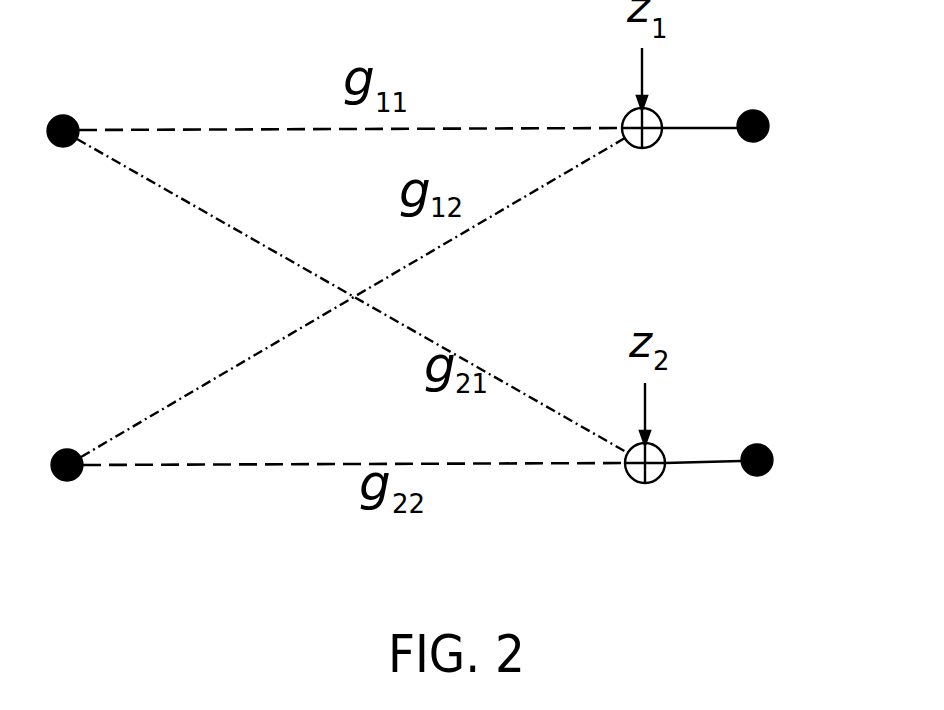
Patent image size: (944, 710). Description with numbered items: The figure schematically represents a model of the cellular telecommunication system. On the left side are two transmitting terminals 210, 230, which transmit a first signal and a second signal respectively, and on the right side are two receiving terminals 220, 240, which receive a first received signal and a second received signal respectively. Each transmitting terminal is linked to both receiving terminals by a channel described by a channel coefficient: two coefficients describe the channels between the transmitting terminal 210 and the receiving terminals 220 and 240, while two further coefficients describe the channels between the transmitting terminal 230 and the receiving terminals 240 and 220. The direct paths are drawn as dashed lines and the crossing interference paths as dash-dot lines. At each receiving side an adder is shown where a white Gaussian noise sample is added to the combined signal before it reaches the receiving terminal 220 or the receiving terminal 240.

The transmitting terminal 210 is at (68, 115).
The receiving terminal 220 is at (753, 110).
The transmitting terminal 230 is at (70, 481).
The receiving terminal 240 is at (757, 476).